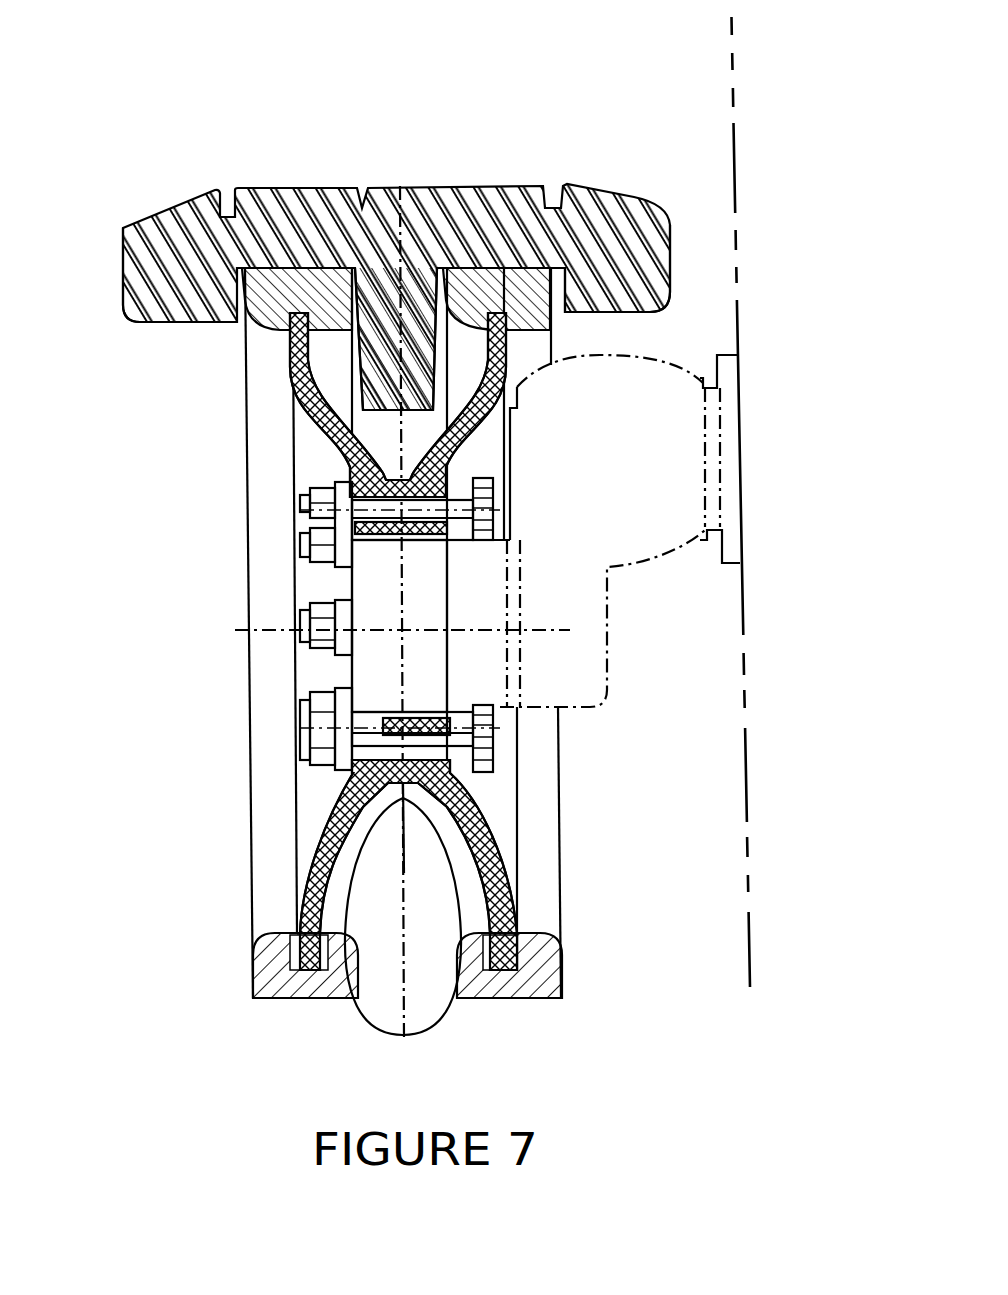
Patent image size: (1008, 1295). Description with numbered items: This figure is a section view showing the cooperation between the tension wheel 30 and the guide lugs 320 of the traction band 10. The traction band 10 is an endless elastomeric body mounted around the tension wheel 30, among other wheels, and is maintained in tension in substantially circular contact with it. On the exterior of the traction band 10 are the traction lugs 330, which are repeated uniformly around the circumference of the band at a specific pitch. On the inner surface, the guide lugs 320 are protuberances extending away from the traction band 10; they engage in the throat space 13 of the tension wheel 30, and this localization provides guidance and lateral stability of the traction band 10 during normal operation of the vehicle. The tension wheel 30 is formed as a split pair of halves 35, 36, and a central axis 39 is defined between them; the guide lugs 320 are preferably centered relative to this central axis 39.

The traction band 10 is at (610, 193).
The traction lugs 330 is at (183, 327).
The guide lugs 320 is at (363, 414).
The tension wheel half 35 is at (285, 812).
The tension wheel 30 is at (250, 860).
The tension wheel half 36 is at (538, 834).
The throat space 13 is at (358, 1020).
The central axis 39 is at (413, 978).